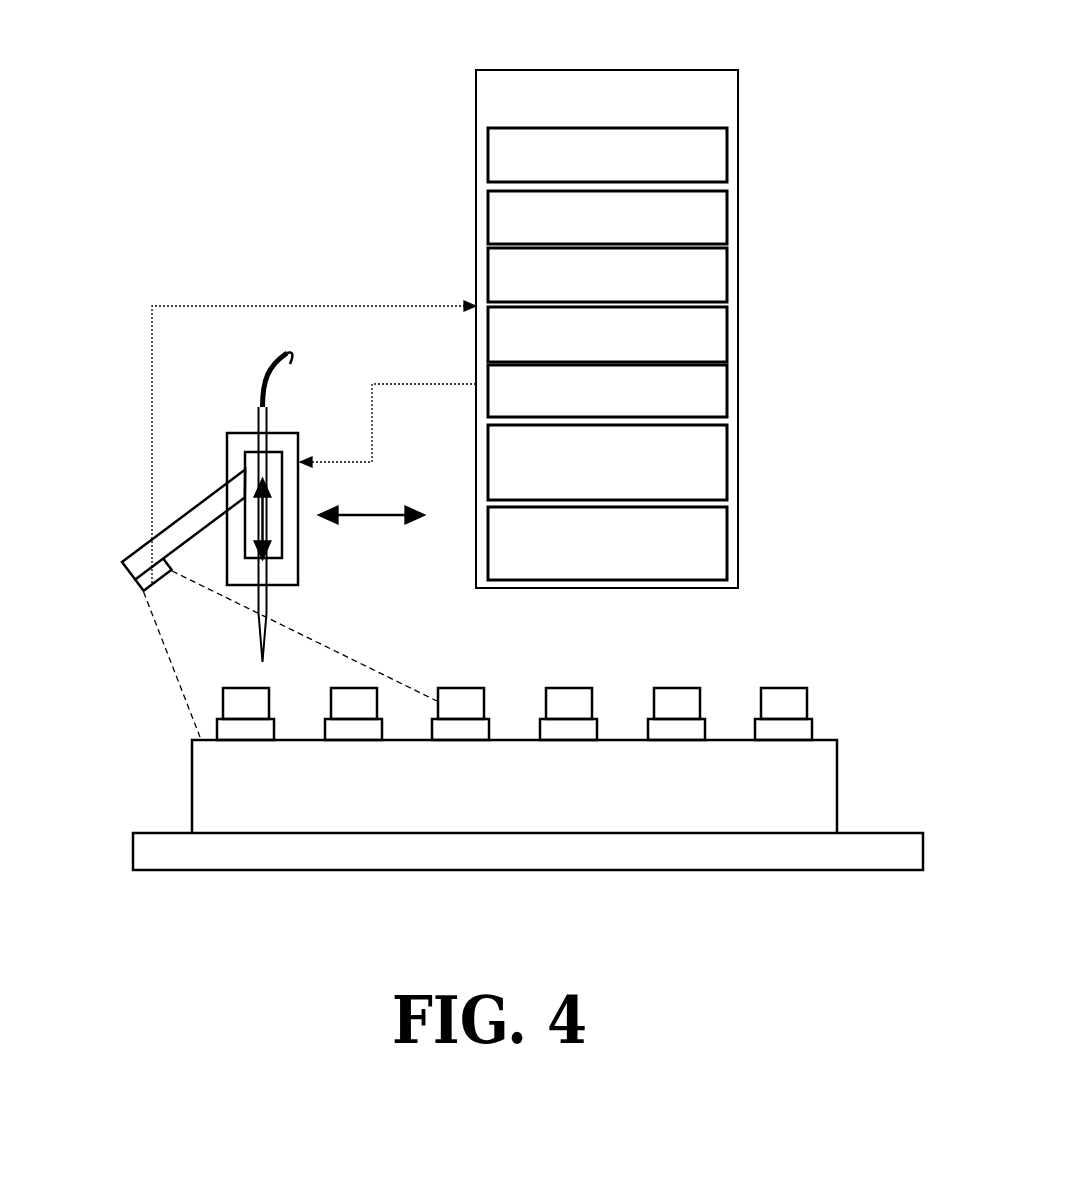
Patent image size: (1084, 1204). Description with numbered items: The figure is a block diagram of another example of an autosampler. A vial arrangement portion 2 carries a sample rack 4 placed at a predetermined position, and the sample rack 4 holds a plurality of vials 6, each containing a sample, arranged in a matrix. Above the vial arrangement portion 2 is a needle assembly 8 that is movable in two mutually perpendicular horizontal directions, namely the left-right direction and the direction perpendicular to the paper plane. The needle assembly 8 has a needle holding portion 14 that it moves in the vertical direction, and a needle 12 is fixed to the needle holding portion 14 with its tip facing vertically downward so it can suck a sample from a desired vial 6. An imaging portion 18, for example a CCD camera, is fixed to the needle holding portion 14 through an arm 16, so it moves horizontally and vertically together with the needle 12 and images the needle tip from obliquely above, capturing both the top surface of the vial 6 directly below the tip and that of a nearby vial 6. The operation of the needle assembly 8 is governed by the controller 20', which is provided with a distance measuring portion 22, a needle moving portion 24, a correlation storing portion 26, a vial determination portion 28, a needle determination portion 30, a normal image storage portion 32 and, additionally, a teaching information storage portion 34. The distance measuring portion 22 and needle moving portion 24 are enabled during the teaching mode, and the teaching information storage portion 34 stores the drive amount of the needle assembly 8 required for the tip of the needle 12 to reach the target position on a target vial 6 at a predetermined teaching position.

The controller 20' is at (650, 307).
The distance measuring portion 22 is at (727, 146).
The needle moving portion 24 is at (727, 203).
The correlation storing portion 26 is at (727, 262).
The vial determination portion 28 is at (727, 320).
The needle determination portion 30 is at (727, 380).
The normal image storage portion 32 is at (727, 440).
The teaching information storage portion 34 is at (727, 520).
The needle assembly 8 is at (300, 537).
The needle holding portion 14 is at (258, 462).
The needle 12 is at (268, 600).
The arm 16 is at (137, 550).
The imaging portion 18 is at (135, 587).
The vial 6 is at (460, 700).
The sample rack 4 is at (840, 762).
The vial arrangement portion 2 is at (857, 850).